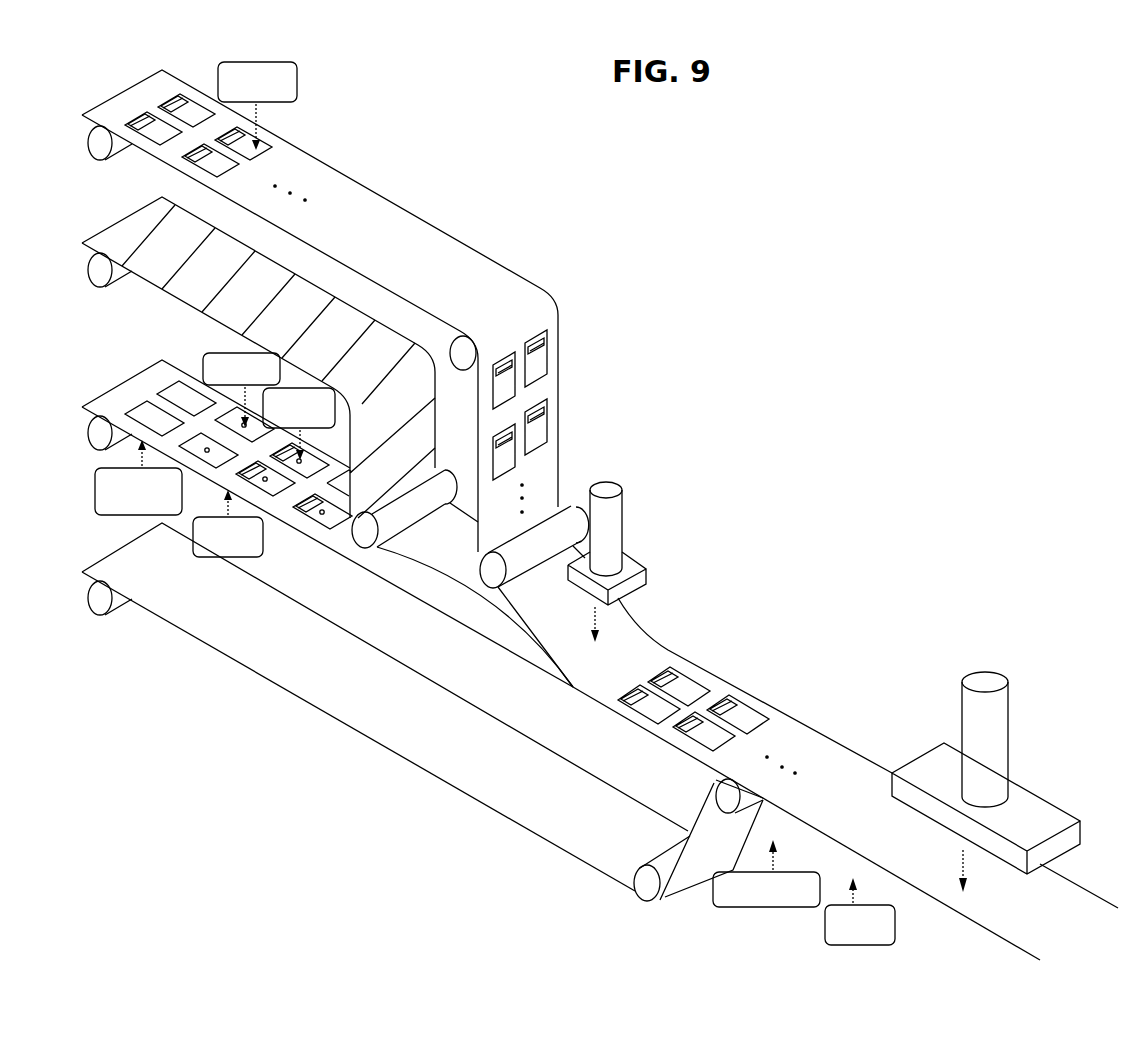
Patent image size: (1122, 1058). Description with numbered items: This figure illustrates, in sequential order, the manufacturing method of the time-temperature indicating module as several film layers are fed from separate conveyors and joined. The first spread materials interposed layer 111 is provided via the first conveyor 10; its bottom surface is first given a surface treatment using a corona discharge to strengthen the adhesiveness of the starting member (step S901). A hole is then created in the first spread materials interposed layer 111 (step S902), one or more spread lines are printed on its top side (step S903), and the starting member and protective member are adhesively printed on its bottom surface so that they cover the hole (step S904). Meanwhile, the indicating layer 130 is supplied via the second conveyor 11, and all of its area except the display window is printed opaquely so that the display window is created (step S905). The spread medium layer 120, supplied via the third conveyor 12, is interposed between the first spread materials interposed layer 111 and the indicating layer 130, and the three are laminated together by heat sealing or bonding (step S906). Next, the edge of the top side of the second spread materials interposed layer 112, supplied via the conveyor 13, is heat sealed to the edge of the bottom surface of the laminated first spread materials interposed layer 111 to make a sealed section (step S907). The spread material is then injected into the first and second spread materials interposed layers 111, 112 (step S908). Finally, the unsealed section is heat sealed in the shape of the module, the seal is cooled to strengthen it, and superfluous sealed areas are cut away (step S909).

The indicating layer 130 is at (137, 100).
The second conveyor 11 is at (90, 141).
The spread medium layer 120 is at (137, 228).
The third conveyor 12 is at (90, 268).
The first spread materials interposed layer 111 is at (137, 388).
The first conveyor 10 is at (88, 428).
The second spread materials interposed layer 112 is at (197, 625).
The conveyor 13 is at (90, 592).
The surface treatment step S901 is at (182, 485).
The hole creation step S902 is at (213, 353).
The spread line printing step S903 is at (331, 389).
The starting member printing step S904 is at (263, 538).
The display window creation step S905 is at (297, 88).
The lamination step S906 is at (614, 488).
The edge heat sealing step S907 is at (810, 872).
The spread material injection step S908 is at (902, 899).
The final sealing and cutting step S909 is at (985, 683).